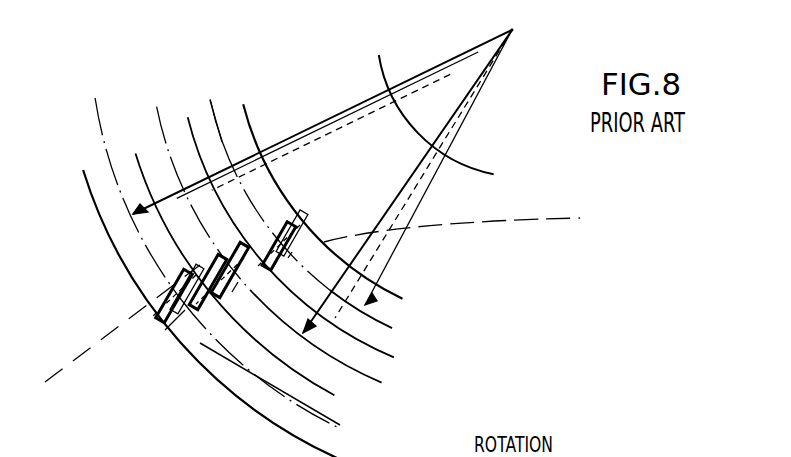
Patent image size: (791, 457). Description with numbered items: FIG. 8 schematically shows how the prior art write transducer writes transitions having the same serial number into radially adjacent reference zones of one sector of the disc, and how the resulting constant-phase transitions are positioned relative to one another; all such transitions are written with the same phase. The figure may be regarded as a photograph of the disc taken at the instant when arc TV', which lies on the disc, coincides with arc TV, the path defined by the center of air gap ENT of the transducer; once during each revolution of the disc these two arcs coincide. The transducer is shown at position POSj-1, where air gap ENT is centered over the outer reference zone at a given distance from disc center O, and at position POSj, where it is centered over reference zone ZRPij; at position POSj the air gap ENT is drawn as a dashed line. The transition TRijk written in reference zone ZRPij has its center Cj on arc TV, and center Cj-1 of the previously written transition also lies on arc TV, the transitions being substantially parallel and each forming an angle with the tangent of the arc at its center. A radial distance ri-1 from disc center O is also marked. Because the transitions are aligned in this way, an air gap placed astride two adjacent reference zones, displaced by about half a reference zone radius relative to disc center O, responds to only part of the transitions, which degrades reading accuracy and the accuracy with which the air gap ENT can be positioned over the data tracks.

The disc center O is at (519, 22).
The transition TRijk is at (176, 190).
The radius i-1 ri-1 is at (227, 150).
The position POSj-1 is at (160, 300).
The position POSj is at (190, 262).
The center of transition Cj-1 is at (190, 322).
The center of transition Cj is at (238, 284).
The air gap ENT is at (182, 266).
The arc TV is at (110, 323).
The arc TV' is at (452, 217).
The reference zone ZRPij is at (317, 340).